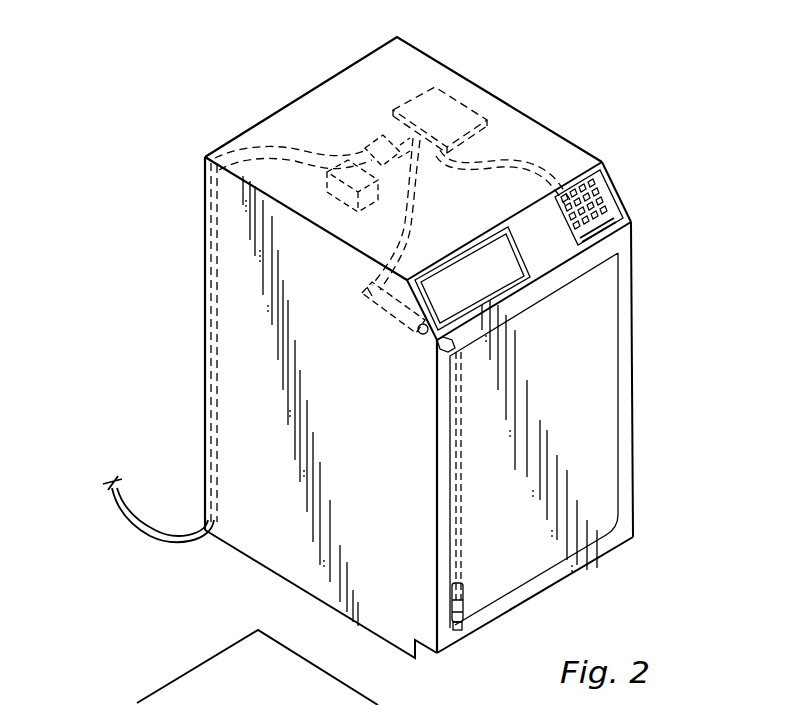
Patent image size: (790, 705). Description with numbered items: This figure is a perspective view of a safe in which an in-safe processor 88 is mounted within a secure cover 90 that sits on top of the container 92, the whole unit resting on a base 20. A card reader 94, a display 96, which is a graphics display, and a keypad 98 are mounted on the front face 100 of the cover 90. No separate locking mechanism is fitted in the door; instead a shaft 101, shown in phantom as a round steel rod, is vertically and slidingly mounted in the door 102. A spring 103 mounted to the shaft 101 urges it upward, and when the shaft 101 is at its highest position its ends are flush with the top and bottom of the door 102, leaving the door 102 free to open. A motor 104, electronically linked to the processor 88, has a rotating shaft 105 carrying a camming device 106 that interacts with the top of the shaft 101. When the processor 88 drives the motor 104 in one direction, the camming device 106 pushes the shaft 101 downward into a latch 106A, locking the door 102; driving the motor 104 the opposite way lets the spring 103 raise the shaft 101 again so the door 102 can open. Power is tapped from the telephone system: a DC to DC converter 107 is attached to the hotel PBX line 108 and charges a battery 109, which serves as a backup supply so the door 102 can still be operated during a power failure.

The base platform 20 is at (133, 697).
The in-safe processor 88 is at (457, 108).
The secure cover 90 is at (543, 145).
The container 92 is at (250, 532).
The card reader 94 is at (612, 223).
The display 96 is at (487, 273).
The keypad 98 is at (606, 195).
The front face 100 is at (543, 249).
The shaft 101 is at (455, 467).
The door 102 is at (590, 440).
The spring 103 is at (463, 585).
The motor 104 is at (383, 303).
The rotating shaft 105 is at (420, 333).
The camming device 106 is at (433, 342).
The latch 106A is at (470, 622).
The DC to DC converter 107 is at (347, 160).
The line 108 is at (110, 503).
The battery 109 is at (380, 141).